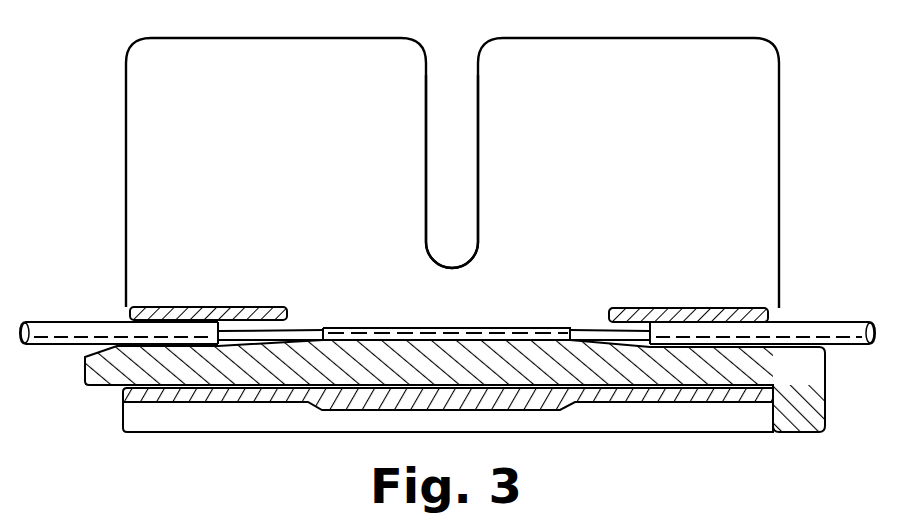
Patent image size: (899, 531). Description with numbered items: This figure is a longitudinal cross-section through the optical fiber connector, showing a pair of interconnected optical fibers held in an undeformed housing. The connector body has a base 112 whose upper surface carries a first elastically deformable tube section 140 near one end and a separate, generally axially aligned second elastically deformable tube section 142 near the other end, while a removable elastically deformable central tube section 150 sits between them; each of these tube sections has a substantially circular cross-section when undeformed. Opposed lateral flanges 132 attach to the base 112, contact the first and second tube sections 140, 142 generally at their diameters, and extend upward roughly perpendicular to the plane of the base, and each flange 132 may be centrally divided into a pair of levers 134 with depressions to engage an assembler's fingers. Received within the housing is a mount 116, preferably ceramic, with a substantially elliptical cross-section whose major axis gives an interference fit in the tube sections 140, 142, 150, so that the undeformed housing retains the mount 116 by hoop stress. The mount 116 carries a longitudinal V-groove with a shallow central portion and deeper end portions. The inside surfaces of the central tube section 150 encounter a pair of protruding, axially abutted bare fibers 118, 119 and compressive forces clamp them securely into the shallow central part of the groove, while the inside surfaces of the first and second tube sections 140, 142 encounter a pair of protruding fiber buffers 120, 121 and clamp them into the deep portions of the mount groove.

The base 112 is at (133, 418).
The mount 116 is at (788, 407).
The bare fiber 118 is at (293, 330).
The bare fiber 119 is at (593, 332).
The fiber buffer 120 is at (91, 330).
The fiber buffer 121 is at (802, 326).
The flanges 132 is at (118, 117).
The levers 134 is at (503, 95).
The first elastically deformable tube section 140 is at (180, 306).
The second elastically deformable tube section 142 is at (712, 309).
The elastically deformable central tube section 150 is at (530, 328).